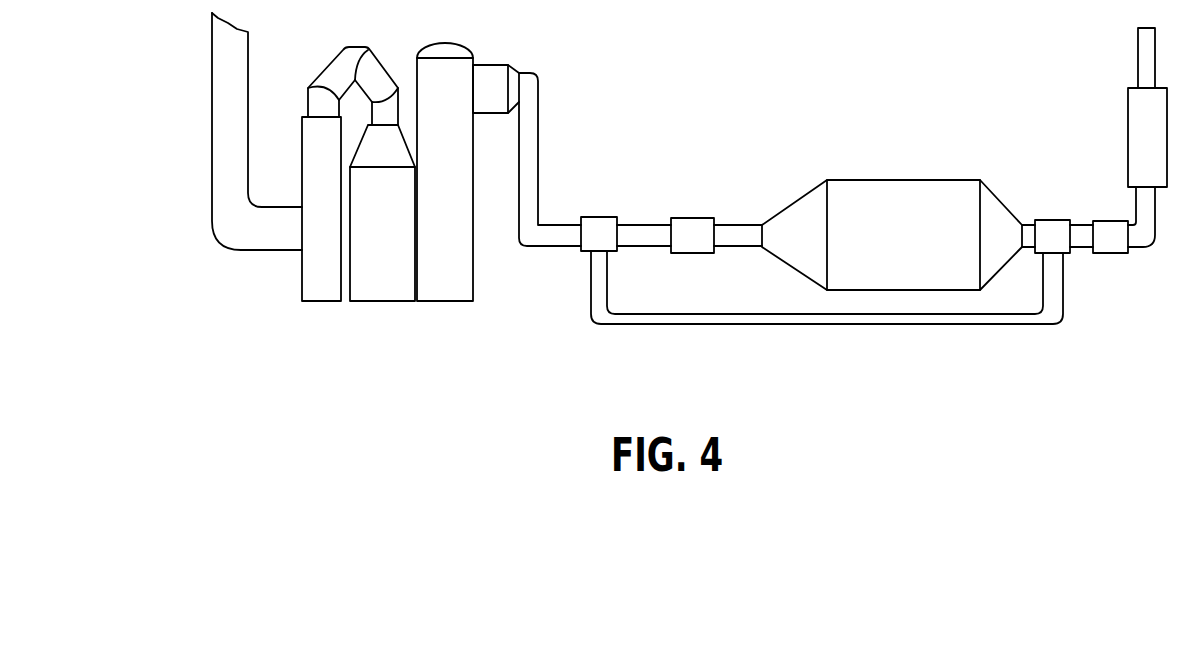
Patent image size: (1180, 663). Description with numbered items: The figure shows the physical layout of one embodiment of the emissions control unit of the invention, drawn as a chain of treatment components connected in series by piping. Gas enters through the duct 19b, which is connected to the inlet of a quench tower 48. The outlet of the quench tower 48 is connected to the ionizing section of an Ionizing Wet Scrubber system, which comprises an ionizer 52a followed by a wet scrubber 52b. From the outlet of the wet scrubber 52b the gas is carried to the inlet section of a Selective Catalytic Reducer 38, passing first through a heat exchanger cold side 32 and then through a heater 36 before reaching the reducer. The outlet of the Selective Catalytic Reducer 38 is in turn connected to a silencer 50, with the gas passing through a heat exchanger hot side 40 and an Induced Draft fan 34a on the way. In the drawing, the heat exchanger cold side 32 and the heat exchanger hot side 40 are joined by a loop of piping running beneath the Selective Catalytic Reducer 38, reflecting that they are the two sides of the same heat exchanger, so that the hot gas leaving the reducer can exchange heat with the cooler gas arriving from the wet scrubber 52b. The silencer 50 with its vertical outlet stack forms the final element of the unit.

The duct 19b is at (227, 108).
The quench tower 48 is at (334, 235).
The ionizer 52a is at (402, 235).
The wet scrubber 52b is at (465, 235).
The heat exchanger cold side 32 is at (602, 228).
The heater 36 is at (693, 232).
The Selective Catalytic Reducer 38 is at (914, 243).
The heat exchanger hot side 40 is at (1057, 233).
The Induced Draft fan 34a is at (1110, 236).
The silencer 50 is at (1137, 138).